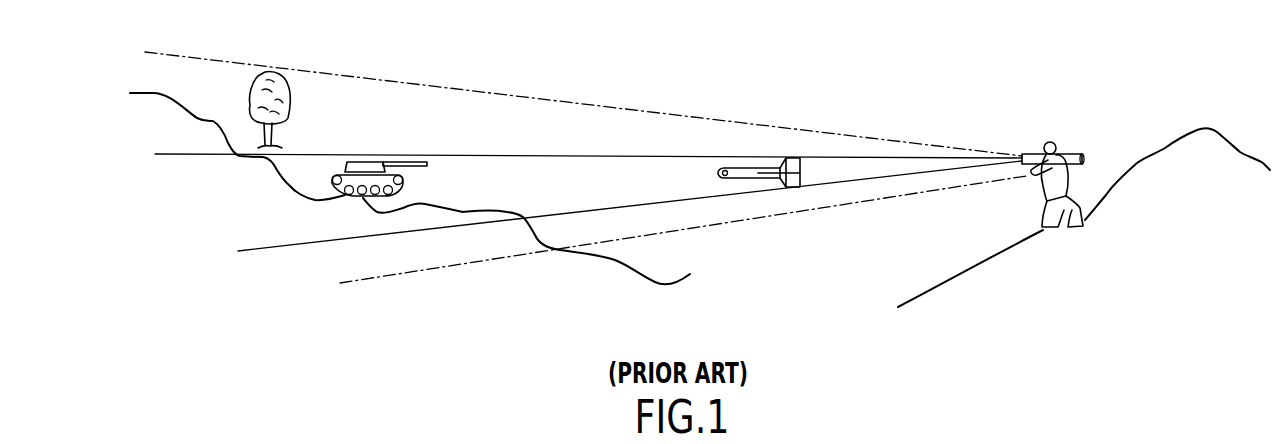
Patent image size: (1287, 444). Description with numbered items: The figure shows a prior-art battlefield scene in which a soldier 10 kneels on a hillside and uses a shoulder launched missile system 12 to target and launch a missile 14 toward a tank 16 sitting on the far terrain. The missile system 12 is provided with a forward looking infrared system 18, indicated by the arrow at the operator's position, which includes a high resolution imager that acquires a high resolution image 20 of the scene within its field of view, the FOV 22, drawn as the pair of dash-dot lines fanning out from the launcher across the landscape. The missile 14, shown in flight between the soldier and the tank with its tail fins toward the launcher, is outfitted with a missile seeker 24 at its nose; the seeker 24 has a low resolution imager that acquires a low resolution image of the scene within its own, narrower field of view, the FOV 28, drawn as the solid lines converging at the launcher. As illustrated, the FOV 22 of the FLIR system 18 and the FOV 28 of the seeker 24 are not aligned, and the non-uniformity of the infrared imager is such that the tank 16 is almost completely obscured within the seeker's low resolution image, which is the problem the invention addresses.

The soldier 10 is at (1088, 217).
The shoulder launched missile system 12 is at (1072, 153).
The missile 14 is at (802, 159).
The tank 16 is at (373, 173).
The forward looking infrared (FLIR) system 18 is at (1025, 184).
The high resolution image 20 is at (422, 443).
The FOV 22 is at (502, 95).
The missile seeker 24 is at (722, 173).
The FOV 28 is at (543, 157).